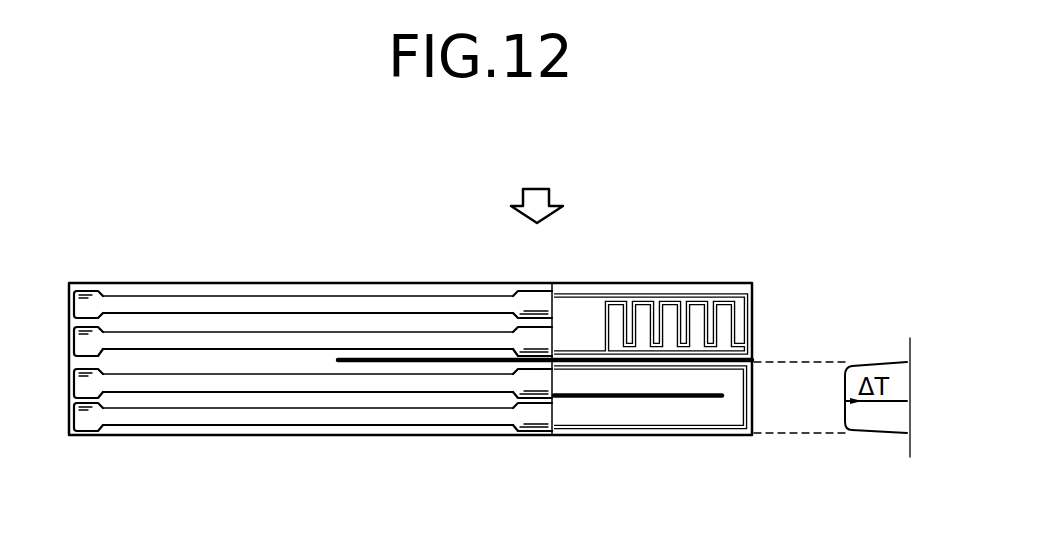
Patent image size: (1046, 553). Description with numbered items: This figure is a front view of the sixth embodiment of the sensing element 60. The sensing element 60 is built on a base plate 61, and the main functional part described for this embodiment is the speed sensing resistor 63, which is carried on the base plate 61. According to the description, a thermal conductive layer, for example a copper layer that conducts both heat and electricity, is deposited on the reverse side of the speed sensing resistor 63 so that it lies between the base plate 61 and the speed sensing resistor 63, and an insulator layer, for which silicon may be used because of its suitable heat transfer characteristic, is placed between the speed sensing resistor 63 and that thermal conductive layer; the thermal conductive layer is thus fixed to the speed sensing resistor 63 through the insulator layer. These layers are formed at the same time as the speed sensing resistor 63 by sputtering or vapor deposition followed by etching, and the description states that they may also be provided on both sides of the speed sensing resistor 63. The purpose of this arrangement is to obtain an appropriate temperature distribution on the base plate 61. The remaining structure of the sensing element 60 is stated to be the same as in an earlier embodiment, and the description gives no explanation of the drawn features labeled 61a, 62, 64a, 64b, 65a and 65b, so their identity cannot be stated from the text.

The sensing element 60 is at (385, 258).
The base plate 61 is at (462, 431).
The partition / edge of substrate 61a is at (753, 361).
The heater (meander resistor) 62 is at (750, 302).
The speed sensing resistor 63 is at (670, 417).
The lead conductor 64a is at (178, 337).
The lead conductor 64b is at (258, 298).
The lead conductor 65a is at (192, 412).
The lead conductor 65b is at (275, 383).